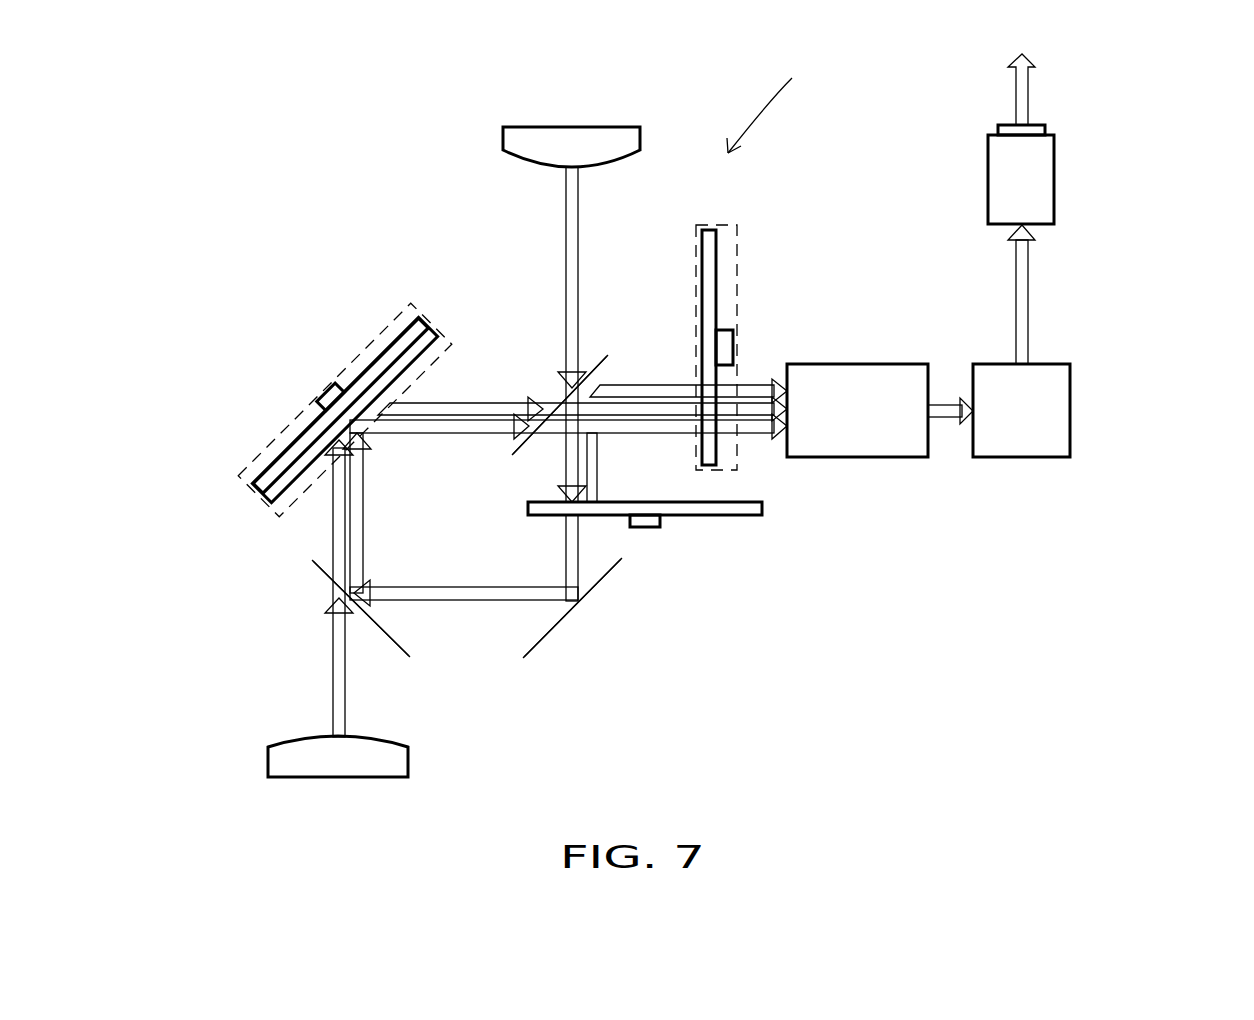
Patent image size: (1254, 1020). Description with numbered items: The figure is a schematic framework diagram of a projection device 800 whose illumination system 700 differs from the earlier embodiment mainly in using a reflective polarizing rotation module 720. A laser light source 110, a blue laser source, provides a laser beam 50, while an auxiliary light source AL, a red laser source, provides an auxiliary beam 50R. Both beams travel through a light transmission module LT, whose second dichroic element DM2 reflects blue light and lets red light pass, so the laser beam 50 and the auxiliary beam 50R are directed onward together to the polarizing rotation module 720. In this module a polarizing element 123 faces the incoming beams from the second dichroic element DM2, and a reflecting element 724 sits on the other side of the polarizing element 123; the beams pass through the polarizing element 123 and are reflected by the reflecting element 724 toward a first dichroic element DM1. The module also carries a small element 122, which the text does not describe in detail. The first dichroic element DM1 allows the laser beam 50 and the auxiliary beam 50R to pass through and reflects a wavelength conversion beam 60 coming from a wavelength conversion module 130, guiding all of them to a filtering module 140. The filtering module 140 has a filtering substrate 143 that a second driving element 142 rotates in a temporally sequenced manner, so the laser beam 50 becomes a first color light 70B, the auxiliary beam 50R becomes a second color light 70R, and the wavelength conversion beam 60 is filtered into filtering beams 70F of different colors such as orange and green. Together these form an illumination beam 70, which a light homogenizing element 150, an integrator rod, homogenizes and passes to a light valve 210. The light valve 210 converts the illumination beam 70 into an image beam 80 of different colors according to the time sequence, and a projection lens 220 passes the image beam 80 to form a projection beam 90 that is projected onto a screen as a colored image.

The laser light source 110 is at (573, 143).
The laser beam 50 is at (566, 268).
The illumination system 700 is at (783, 104).
The polarizing rotation module 720 is at (373, 333).
The reflecting element 724 is at (258, 492).
The polarizing element 123 is at (433, 332).
The light transmitting portion 122 is at (330, 397).
The auxiliary beam 50R is at (333, 672).
The second color light 70R is at (760, 433).
The first color light 70B is at (730, 433).
The filtering beam 70F is at (772, 433).
The wavelength conversion beam 60 is at (597, 485).
The first dichroic element DM1 is at (624, 372).
The wavelength conversion module 130 is at (546, 512).
The filtering module 140 is at (740, 268).
The filtering substrate 143 is at (710, 307).
The second driving element 142 is at (733, 355).
The light homogenizing element 150 is at (877, 437).
The illumination beam 70 is at (943, 420).
The light valve 210 is at (1063, 414).
The image beam 80 is at (1030, 298).
The projection lens 220 is at (1043, 180).
The projection beam 90 is at (1023, 88).
The second dichroic element DM2 is at (405, 640).
The light transmission module LT is at (565, 618).
The auxiliary light source AL is at (290, 758).
The projection device 800 is at (1165, 773).